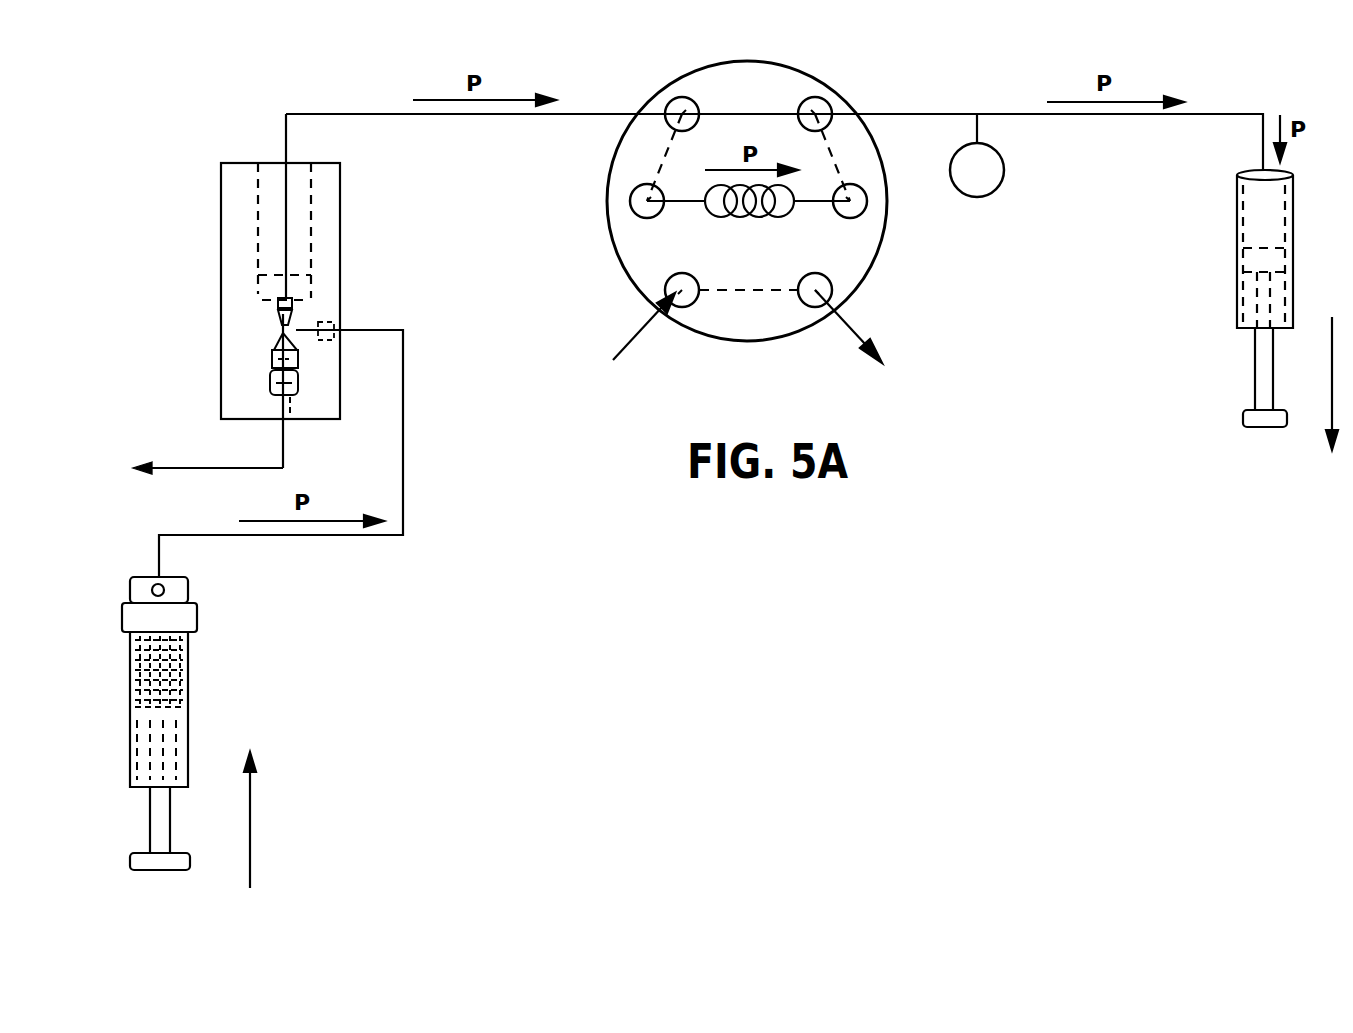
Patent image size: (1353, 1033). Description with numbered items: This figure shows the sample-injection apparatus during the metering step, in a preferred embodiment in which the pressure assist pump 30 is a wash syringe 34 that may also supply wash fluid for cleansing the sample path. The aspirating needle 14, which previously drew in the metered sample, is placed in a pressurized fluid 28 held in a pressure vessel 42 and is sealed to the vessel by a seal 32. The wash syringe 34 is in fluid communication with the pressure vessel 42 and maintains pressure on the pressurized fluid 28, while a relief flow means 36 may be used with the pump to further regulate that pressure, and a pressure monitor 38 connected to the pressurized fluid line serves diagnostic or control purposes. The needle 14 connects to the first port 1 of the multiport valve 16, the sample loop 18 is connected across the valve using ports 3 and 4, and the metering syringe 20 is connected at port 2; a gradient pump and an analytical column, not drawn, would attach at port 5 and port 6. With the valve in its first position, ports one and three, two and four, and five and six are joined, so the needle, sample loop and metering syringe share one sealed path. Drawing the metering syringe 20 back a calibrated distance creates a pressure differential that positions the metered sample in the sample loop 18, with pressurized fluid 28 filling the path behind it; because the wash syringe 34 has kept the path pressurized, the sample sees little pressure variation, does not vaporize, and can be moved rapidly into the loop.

The first port 1 is at (682, 97).
The port 2 is at (815, 97).
The port 3 is at (608, 201).
The port 4 is at (885, 201).
The port 5 is at (665, 290).
The port 6 is at (832, 290).
The aspirating needle 14 is at (300, 316).
The multiport valve 16 is at (885, 255).
The sample loop 18 is at (708, 214).
The metering syringe 20 is at (1293, 232).
The pressurized fluid 28 is at (301, 363).
The pressure assist pump 30 is at (113, 723).
The seal 32 is at (272, 288).
The wash syringe 34 is at (130, 716).
The relief flow means 36 is at (286, 452).
The pressure monitor 38 is at (1004, 176).
The pressure vessel 42 is at (221, 388).